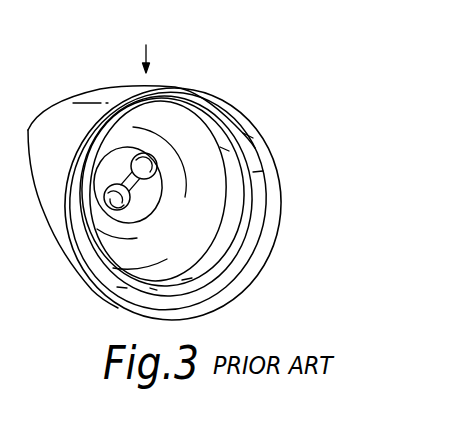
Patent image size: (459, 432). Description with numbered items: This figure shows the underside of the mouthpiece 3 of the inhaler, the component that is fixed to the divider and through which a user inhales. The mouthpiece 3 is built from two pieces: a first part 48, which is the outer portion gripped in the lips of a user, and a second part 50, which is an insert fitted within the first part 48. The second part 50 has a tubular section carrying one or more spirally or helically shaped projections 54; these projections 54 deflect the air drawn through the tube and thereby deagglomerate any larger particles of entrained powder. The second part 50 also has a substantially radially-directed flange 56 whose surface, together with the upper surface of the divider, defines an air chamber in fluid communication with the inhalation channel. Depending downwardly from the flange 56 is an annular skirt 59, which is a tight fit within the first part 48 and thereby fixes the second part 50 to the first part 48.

The mouthpiece 3 is at (146, 46).
The first part 48 is at (267, 138).
The second part 50 is at (250, 212).
The spirally or helically shaped projections 54 is at (122, 179).
The radially-directed flange 56 is at (185, 142).
The annular skirt 59 is at (212, 261).